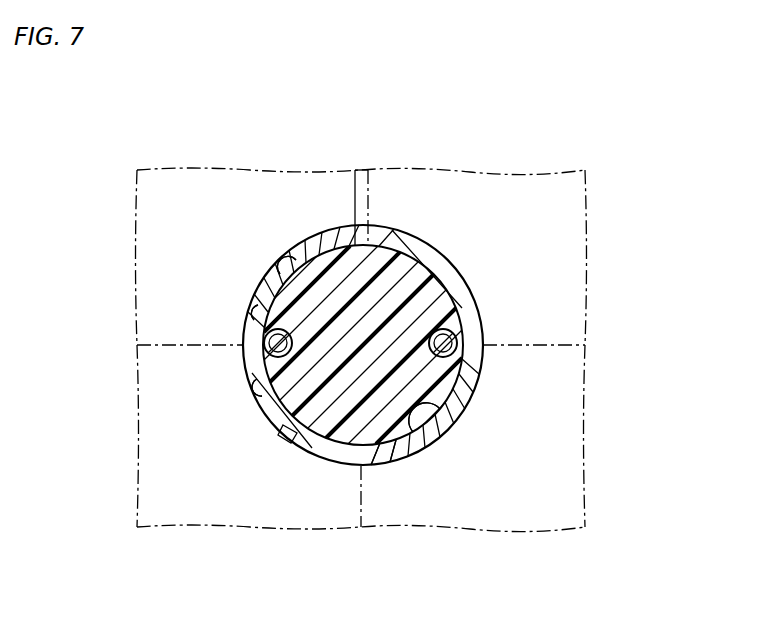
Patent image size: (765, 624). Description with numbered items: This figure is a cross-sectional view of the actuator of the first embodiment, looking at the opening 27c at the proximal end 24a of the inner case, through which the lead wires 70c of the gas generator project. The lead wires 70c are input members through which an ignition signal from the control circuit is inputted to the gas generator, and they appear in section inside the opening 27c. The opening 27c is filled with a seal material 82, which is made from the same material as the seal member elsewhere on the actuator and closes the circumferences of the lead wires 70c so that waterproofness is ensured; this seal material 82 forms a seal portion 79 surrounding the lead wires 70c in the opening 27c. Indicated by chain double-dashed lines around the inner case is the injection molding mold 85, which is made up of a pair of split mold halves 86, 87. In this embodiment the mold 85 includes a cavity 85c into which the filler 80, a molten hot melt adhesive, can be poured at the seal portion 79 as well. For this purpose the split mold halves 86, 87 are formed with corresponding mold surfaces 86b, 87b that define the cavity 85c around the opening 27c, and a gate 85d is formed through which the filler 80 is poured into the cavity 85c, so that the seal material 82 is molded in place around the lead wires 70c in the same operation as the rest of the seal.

The filler 80 is at (361, 158).
The gate 85d is at (366, 197).
The cavity 85c is at (283, 268).
The mold surface 86b is at (244, 326).
The lead wires 70c is at (266, 351).
The mold surface 87b is at (262, 398).
The split mold half 86 is at (550, 305).
The injection molding mold 85 is at (677, 293).
The split mold half 87 is at (550, 380).
The seal portion 79 is at (283, 433).
The seal material 82 is at (348, 428).
The proximal end 24a is at (400, 466).
The opening 27c is at (418, 413).